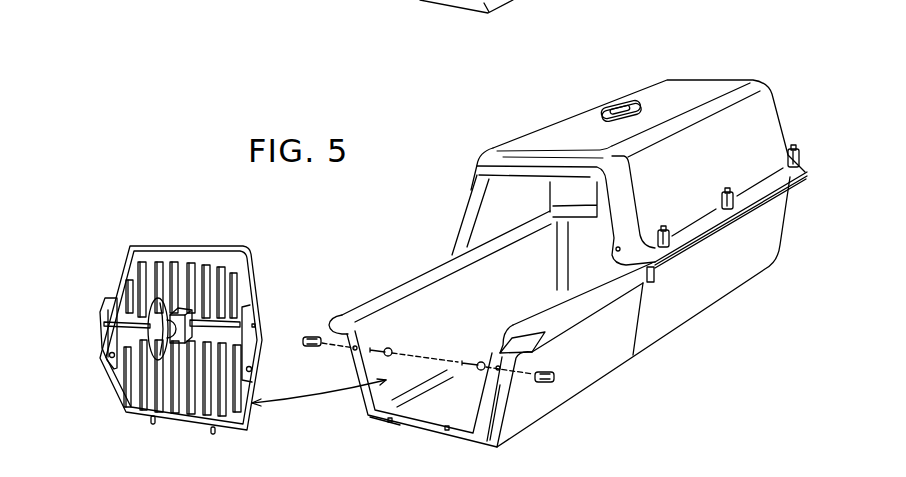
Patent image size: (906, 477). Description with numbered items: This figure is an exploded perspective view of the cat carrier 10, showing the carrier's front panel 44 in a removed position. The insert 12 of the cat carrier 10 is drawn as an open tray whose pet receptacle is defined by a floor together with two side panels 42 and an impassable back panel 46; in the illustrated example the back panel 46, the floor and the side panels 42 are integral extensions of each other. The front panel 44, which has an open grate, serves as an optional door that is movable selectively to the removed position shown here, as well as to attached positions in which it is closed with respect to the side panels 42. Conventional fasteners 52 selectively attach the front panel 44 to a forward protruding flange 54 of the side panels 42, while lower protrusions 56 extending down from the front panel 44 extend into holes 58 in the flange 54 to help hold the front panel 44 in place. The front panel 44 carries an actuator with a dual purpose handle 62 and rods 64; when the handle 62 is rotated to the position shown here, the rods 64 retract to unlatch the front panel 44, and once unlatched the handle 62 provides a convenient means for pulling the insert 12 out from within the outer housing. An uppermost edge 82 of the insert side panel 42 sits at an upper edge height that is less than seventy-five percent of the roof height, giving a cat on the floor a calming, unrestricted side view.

The cat carrier 10 is at (719, 55).
The insert 12 is at (555, 0).
The side panels 42 is at (618, 403).
The front panel 44 is at (173, 244).
The back panel 46 is at (587, 246).
The fasteners 52 is at (320, 347).
The forward protruding flange 54 is at (490, 395).
The lower protrusions 56 is at (153, 421).
The holes 58 is at (392, 433).
The handle 62 is at (157, 315).
The rods 64 is at (115, 340).
The uppermost edge 82 is at (378, 300).